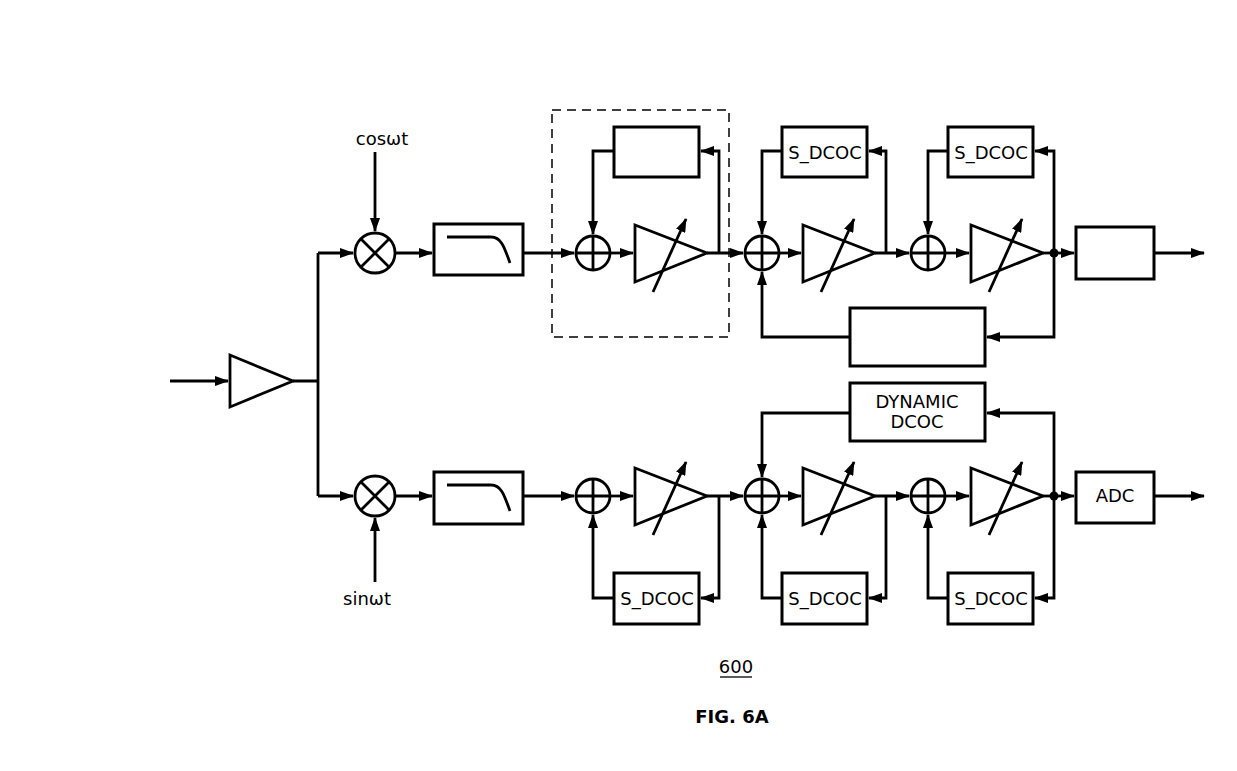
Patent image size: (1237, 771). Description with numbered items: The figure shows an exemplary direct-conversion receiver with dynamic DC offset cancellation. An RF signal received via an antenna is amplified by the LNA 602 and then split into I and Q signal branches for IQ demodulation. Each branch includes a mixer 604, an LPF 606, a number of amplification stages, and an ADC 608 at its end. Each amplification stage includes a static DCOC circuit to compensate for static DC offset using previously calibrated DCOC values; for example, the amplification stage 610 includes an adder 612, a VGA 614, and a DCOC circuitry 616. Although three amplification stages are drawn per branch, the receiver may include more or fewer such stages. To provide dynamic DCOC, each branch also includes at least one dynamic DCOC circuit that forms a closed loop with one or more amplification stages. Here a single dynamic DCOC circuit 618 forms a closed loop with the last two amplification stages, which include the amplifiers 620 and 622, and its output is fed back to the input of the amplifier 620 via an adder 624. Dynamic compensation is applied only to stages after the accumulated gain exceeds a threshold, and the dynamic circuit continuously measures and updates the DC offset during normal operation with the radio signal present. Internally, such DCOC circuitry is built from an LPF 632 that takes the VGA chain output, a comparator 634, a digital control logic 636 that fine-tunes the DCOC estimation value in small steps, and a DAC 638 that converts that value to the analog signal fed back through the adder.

The LNA 602 is at (230, 356).
The mixer 604 is at (362, 238).
The LPF 606 is at (446, 224).
The ADC 608 is at (1117, 227).
The amplification stage 610 is at (550, 338).
The adder 612 is at (582, 267).
The VGA 614 is at (638, 224).
The DCOC circuitry 616 is at (683, 127).
The dynamic DCOC circuit 618 is at (986, 363).
The amplifier 620 is at (806, 224).
The amplifier 622 is at (974, 224).
The adder 624 is at (775, 268).
The LPF 632 is at (438, 770).
The comparator 634 is at (613, 770).
The digital control logic 636 is at (833, 770).
The DAC 638 is at (1022, 770).